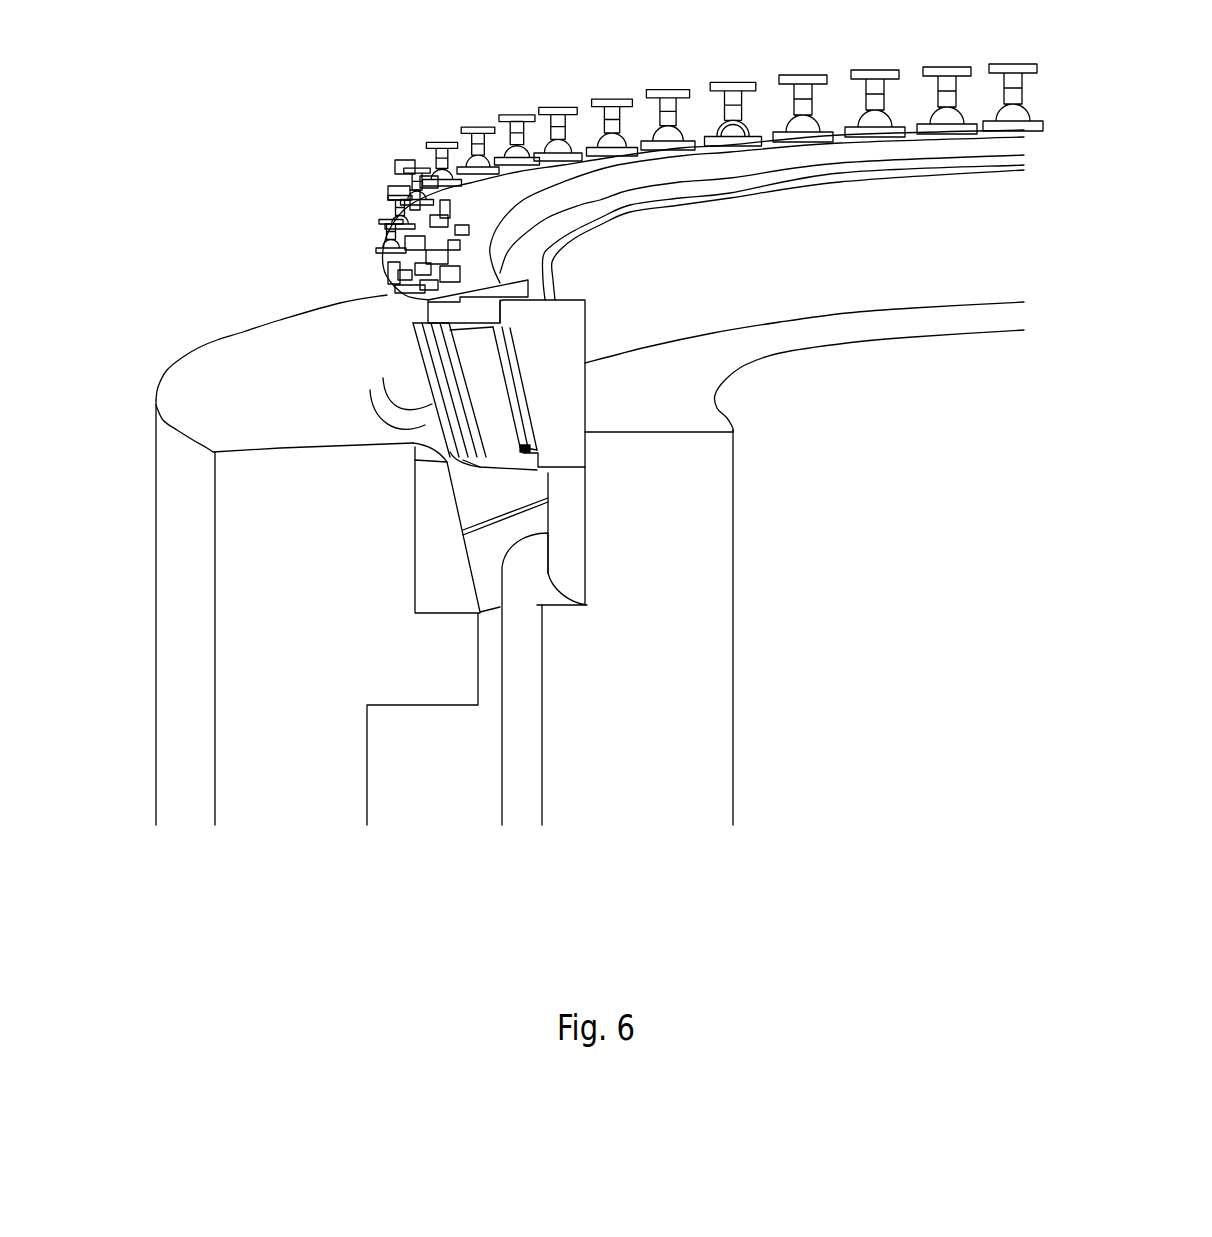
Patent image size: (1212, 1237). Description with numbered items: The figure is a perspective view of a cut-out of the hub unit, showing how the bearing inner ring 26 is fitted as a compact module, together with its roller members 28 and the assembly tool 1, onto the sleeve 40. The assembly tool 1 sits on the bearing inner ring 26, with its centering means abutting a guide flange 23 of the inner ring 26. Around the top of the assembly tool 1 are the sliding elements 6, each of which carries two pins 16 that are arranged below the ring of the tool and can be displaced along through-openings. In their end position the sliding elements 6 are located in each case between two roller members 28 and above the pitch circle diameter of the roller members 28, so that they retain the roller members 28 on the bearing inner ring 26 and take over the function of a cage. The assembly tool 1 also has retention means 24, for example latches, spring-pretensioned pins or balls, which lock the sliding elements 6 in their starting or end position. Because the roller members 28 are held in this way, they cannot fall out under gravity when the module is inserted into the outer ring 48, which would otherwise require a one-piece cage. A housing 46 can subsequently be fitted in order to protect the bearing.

The assembly tool 1 is at (493, 265).
The sliding elements 6 is at (672, 86).
The pins 16 is at (480, 456).
The guide flange 23 is at (507, 311).
The retention means 24 is at (751, 120).
The bearing inner ring 26 is at (570, 412).
The roller members 28 is at (450, 350).
The sleeve 40 is at (718, 633).
The housing 46 is at (241, 680).
The outer ring 48 is at (433, 542).